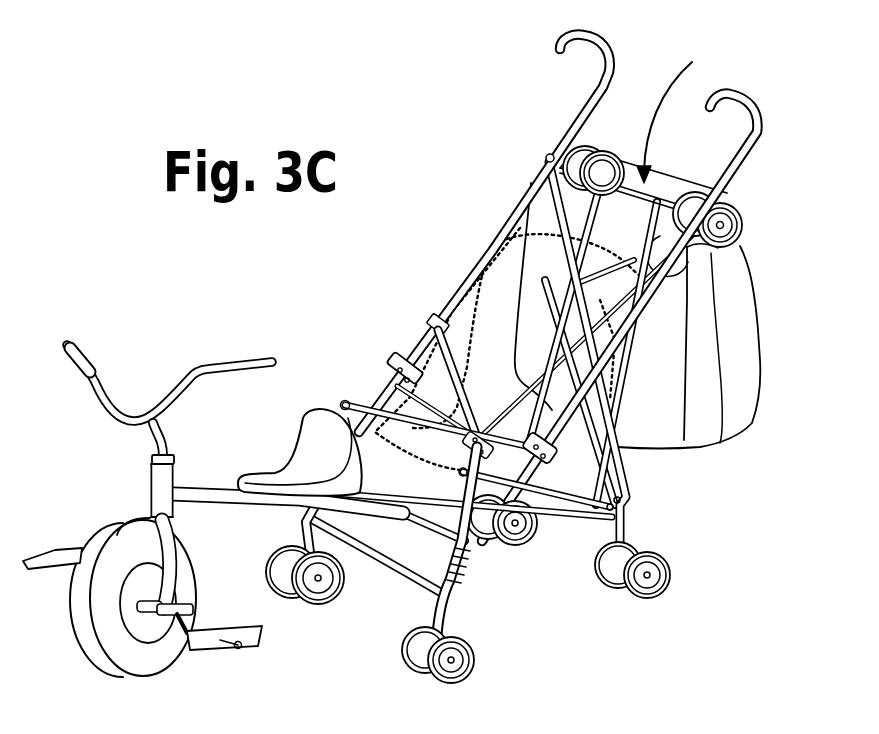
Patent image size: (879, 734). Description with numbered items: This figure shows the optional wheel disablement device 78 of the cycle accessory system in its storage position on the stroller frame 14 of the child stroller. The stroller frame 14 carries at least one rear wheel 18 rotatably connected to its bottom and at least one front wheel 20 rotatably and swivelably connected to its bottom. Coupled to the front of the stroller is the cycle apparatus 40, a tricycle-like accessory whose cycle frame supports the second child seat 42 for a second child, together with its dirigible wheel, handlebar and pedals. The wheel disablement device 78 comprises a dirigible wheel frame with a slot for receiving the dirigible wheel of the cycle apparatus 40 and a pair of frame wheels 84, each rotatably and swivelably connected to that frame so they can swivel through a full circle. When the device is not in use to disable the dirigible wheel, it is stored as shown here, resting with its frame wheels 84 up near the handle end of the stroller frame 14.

The stroller frame 14 is at (490, 539).
The rear wheel 18 is at (658, 575).
The front wheel 20 is at (460, 660).
The cycle apparatus 40 is at (215, 505).
The second child seat 42 is at (306, 428).
The wheel disablement device 78 is at (707, 283).
The frame wheel 84 is at (603, 160).